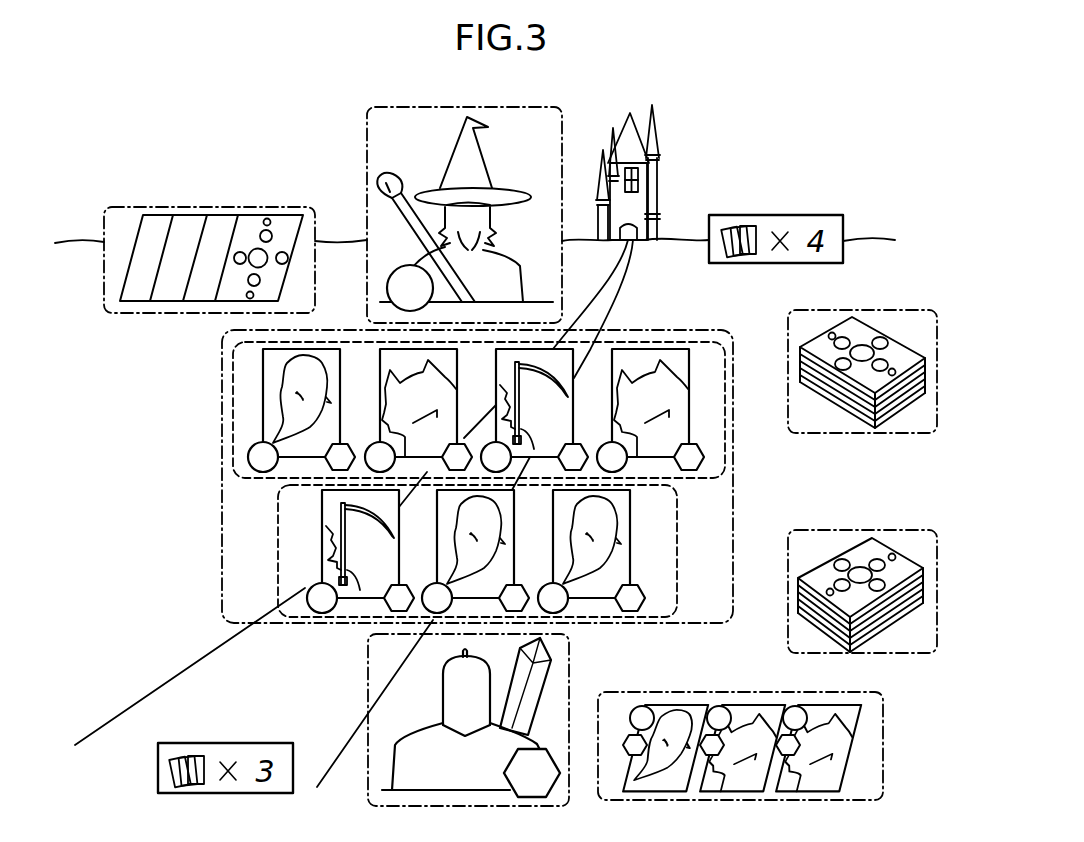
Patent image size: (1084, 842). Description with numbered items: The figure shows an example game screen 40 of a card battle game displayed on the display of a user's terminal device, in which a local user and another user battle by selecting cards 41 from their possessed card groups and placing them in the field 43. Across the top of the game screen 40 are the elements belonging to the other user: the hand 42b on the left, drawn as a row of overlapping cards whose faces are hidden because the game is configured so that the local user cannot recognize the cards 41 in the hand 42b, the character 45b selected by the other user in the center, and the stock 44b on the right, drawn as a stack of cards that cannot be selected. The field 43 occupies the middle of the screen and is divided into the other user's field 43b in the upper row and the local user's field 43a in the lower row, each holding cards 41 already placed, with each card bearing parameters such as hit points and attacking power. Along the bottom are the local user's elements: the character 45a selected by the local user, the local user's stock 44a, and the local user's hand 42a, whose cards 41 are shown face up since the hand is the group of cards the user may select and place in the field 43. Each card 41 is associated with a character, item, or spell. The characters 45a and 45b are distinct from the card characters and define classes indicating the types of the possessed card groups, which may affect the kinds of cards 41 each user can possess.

The game screen 40 is at (800, 164).
The card 41 is at (697, 705).
The hand of the local user 42a is at (740, 713).
The hand of the other user 42b is at (145, 207).
The field 43 is at (688, 330).
The local user's field 43a is at (278, 544).
The other user's field 43b is at (233, 435).
The stock of the local user 44a is at (910, 530).
The stock of the other user 44b is at (910, 310).
The character selected by the local user 45a is at (368, 666).
The character selected by the other user 45b is at (367, 150).